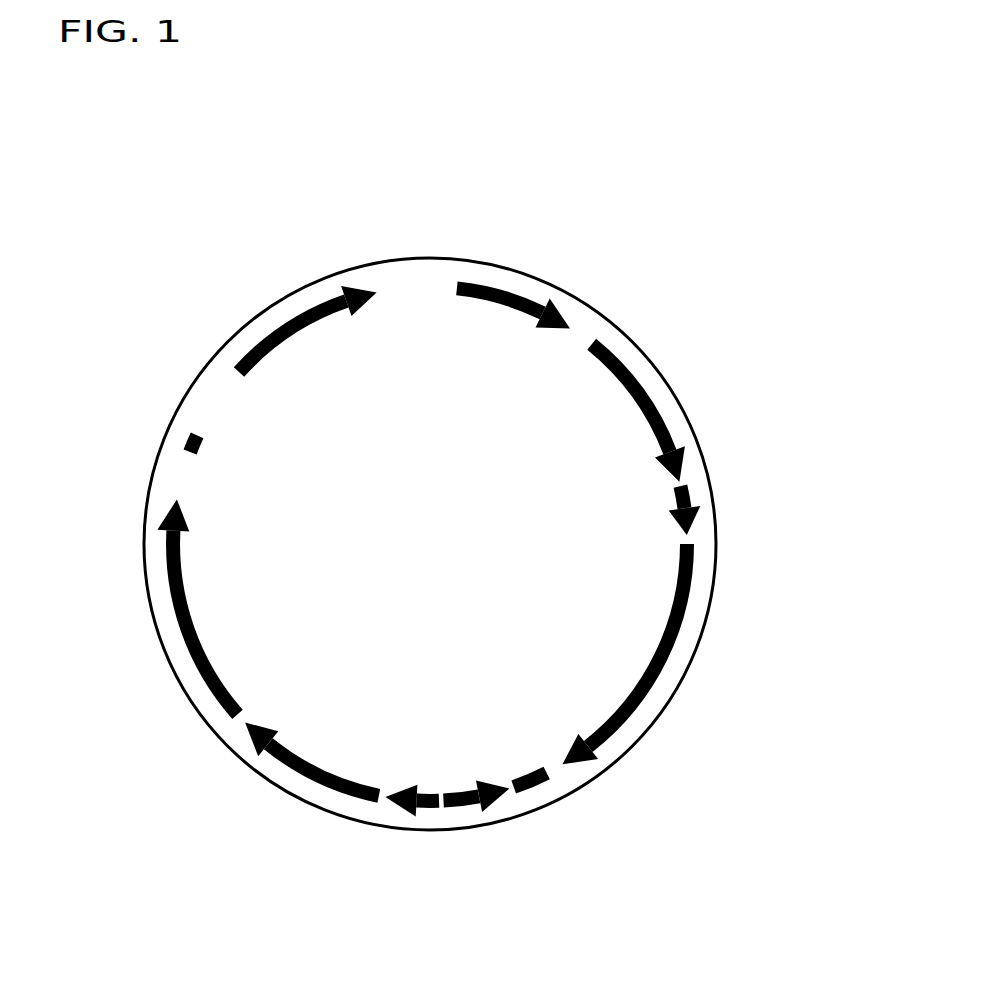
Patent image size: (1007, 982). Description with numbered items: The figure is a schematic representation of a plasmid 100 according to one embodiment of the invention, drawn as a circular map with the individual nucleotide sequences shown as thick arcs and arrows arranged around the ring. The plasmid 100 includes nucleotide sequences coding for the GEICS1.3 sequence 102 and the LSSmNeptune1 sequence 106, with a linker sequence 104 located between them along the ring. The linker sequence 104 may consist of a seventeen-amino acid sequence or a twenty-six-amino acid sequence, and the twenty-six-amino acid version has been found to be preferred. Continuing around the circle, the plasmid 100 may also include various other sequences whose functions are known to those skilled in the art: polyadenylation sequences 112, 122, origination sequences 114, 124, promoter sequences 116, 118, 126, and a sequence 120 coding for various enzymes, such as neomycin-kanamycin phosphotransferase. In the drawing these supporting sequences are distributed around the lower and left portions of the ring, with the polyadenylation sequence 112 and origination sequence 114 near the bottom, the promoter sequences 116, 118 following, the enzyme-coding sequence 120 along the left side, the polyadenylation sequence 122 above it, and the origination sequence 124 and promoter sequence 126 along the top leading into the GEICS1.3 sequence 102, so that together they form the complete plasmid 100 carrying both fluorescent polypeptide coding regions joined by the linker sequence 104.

The plasmid 100 is at (603, 253).
The GEICS1.3 sequence 102 is at (630, 377).
The linker sequence 104 is at (688, 497).
The LSSmNeptune1 sequence 106 is at (682, 615).
The polyadenylation sequence 112 is at (545, 782).
The origination sequence 114 is at (480, 803).
The promoter sequence 116 is at (415, 807).
The promoter sequence 118 is at (305, 775).
The sequence coding for enzymes 120 is at (193, 662).
The polyadenylation sequence 122 is at (188, 445).
The origination sequence 124 is at (298, 322).
The promoter sequence 126 is at (517, 298).